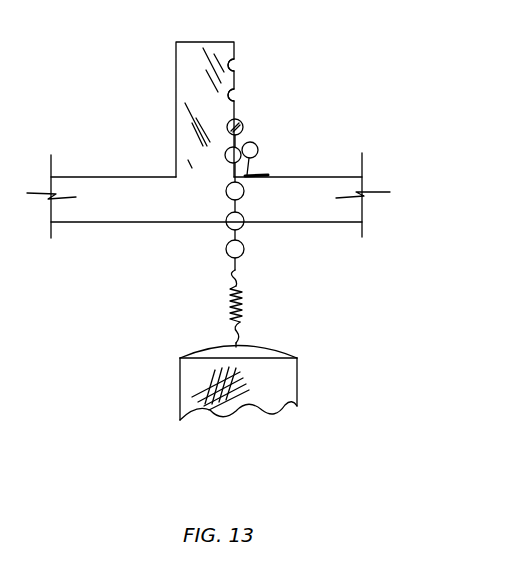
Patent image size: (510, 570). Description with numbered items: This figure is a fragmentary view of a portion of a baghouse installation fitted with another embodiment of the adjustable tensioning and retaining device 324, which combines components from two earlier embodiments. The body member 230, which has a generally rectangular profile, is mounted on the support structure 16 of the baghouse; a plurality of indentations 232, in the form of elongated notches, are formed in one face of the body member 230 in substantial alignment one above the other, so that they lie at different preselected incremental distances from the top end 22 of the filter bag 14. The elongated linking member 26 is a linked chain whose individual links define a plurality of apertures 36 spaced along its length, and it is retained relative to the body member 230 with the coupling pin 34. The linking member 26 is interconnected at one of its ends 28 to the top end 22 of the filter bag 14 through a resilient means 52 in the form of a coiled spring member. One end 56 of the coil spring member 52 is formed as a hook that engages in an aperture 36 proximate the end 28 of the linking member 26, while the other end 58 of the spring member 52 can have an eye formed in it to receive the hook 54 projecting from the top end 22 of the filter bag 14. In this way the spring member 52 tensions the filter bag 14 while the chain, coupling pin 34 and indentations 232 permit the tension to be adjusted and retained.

The filter bag 14 is at (283, 384).
The support structure 16 is at (312, 192).
The top end of the filter bag 22 is at (290, 350).
The elongated linking member 26 is at (256, 236).
The one end of the linking member 28 is at (245, 262).
The coupling pin 34 is at (243, 126).
The apertures 36 is at (222, 192).
The resilient means 52 is at (248, 295).
The hook 54 is at (250, 320).
The one end of the coil spring member 56 is at (232, 275).
The other end of the coil spring member 58 is at (232, 333).
The body member 230 is at (190, 95).
The indentations 232 is at (240, 62).
The adjustable tensioning and retaining device 324 is at (118, 254).